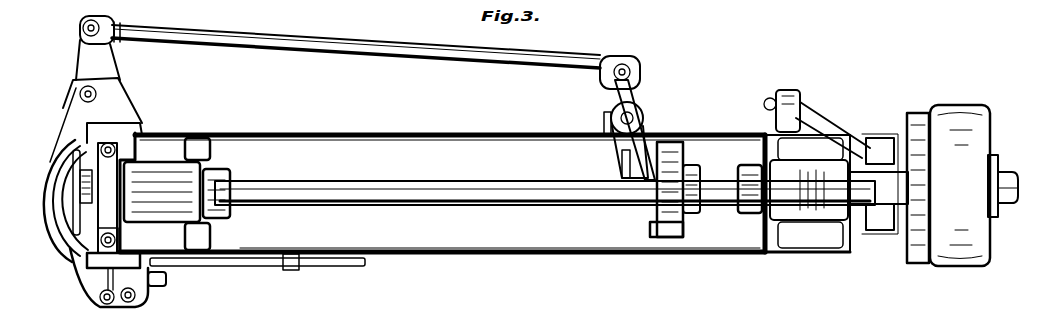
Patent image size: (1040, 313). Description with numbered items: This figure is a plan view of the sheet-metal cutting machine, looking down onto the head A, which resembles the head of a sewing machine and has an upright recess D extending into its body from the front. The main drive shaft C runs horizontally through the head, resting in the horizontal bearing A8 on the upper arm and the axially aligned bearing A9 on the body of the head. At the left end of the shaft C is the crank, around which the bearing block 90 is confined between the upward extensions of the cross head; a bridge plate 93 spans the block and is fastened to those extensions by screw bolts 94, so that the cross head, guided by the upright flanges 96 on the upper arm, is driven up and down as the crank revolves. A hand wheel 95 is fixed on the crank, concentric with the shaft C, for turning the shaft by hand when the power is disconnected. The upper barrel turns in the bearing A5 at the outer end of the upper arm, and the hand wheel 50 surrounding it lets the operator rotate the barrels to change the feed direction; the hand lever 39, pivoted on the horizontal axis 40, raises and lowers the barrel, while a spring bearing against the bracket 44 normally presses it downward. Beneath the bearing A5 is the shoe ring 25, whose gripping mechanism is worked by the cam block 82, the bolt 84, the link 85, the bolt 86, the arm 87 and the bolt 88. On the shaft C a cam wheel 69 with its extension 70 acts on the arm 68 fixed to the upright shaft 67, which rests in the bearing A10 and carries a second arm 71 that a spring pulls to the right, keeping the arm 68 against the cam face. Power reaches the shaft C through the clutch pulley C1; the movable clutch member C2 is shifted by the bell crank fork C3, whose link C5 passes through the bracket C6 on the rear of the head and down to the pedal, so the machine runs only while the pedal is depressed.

The head A is at (442, 179).
The main drive shaft C is at (545, 193).
The upright recess D is at (789, 282).
The ring 25 is at (66, 128).
The hand lever 39 is at (256, 262).
The horizontal axis 40 is at (162, 286).
The bracket 44 is at (98, 280).
The hand wheel 50 is at (46, 228).
The shaft 67 is at (632, 118).
The arm 68 is at (655, 140).
The cam wheel 69 is at (686, 140).
The extension 70 is at (650, 228).
The arm 71 is at (622, 164).
The cam block 82 is at (90, 55).
The bolt 84 is at (80, 94).
The link 85 is at (362, 50).
The bolt 86 is at (84, 27).
The arm 87 is at (634, 90).
The bolt 88 is at (628, 68).
The bearing block 90 is at (135, 160).
The bridge plate 93 is at (136, 130).
The screw bolts 94 is at (112, 143).
The hand wheel 95 is at (52, 162).
The upright flanges 96 is at (92, 126).
The bearing A5 is at (46, 196).
The horizontal bearing A8 is at (165, 160).
The bearing A9 is at (770, 150).
The upright bearing A10 is at (608, 124).
The clutch pulley C1 is at (955, 122).
The movable clutch member C2 is at (910, 246).
The bell crank fork C3 is at (878, 140).
The link C5 is at (797, 104).
The bracket C6 is at (776, 104).